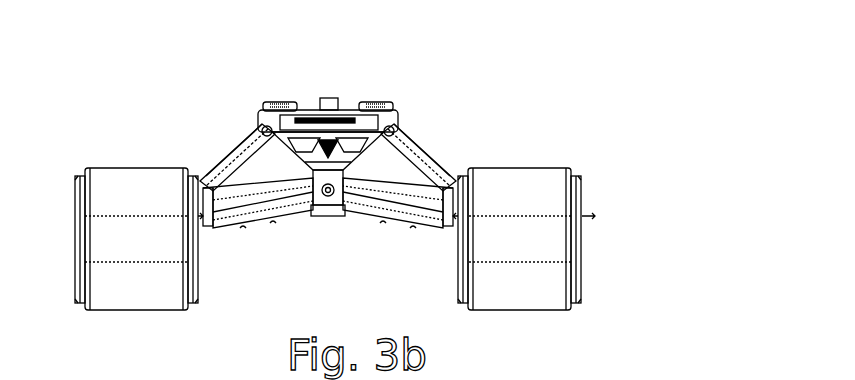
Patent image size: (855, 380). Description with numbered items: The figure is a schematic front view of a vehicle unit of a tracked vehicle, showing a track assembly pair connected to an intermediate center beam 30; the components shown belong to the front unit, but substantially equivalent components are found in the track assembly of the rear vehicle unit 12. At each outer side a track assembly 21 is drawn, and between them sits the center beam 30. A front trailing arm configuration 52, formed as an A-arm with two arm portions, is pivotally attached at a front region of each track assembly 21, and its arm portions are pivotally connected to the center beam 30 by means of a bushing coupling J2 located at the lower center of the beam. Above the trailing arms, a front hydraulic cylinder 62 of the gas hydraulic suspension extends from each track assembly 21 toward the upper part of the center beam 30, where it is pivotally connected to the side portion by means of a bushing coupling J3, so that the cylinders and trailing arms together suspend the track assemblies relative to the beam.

The track assembly 21 is at (137, 170).
The rear vehicle unit 12 is at (442, 78).
The intermediate center beam 30 is at (308, 112).
The front trailing arm configuration 52 is at (258, 221).
The front hydraulic cylinder 62 is at (234, 152).
The bushing coupling J3 is at (268, 128).
The bushing coupling J2 is at (337, 205).